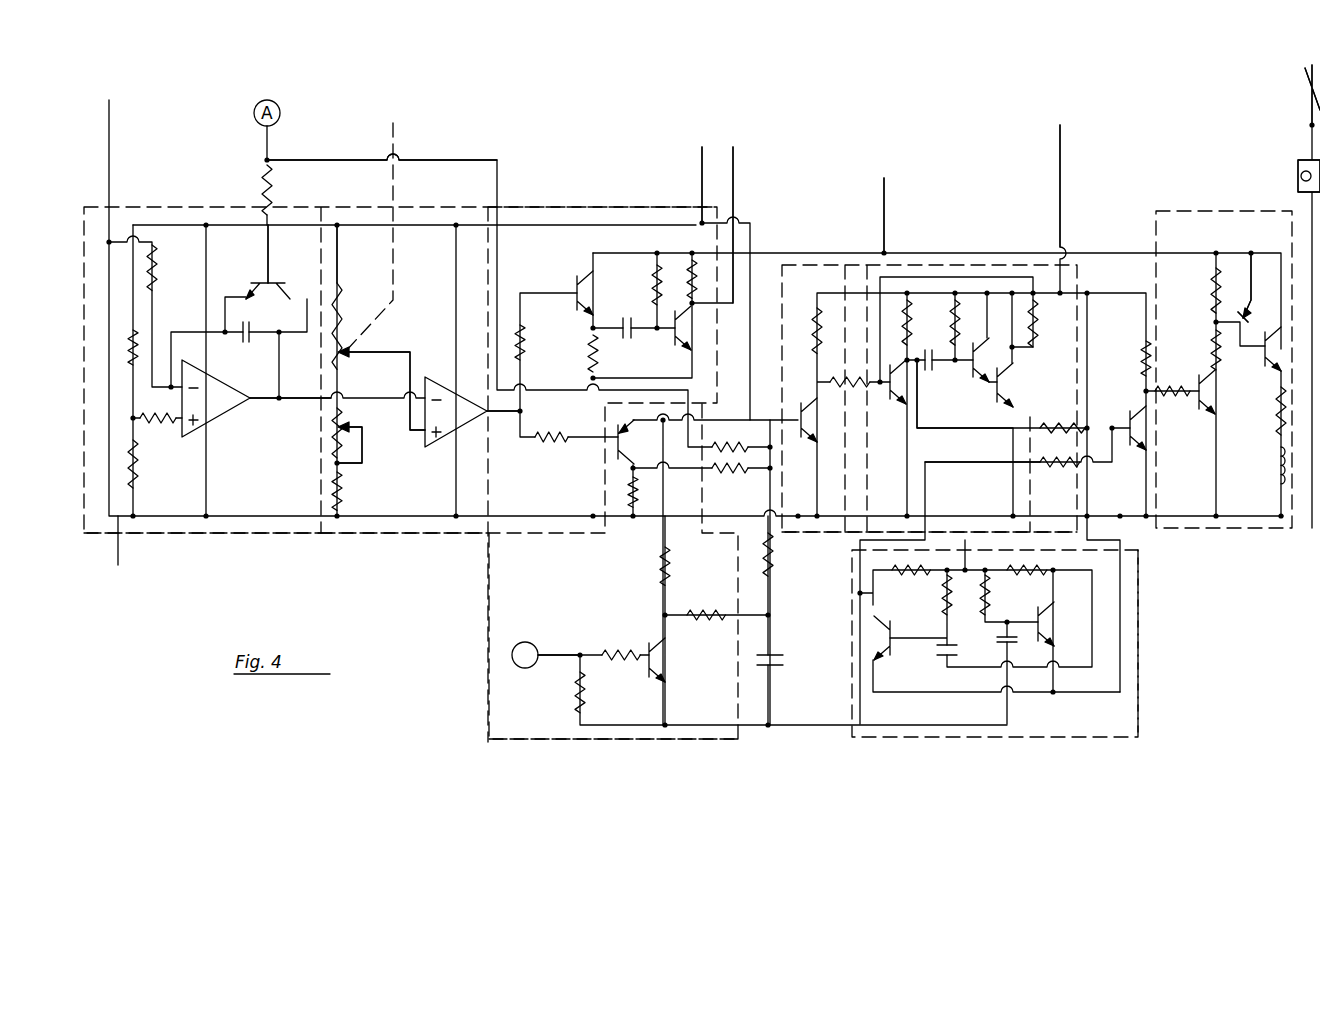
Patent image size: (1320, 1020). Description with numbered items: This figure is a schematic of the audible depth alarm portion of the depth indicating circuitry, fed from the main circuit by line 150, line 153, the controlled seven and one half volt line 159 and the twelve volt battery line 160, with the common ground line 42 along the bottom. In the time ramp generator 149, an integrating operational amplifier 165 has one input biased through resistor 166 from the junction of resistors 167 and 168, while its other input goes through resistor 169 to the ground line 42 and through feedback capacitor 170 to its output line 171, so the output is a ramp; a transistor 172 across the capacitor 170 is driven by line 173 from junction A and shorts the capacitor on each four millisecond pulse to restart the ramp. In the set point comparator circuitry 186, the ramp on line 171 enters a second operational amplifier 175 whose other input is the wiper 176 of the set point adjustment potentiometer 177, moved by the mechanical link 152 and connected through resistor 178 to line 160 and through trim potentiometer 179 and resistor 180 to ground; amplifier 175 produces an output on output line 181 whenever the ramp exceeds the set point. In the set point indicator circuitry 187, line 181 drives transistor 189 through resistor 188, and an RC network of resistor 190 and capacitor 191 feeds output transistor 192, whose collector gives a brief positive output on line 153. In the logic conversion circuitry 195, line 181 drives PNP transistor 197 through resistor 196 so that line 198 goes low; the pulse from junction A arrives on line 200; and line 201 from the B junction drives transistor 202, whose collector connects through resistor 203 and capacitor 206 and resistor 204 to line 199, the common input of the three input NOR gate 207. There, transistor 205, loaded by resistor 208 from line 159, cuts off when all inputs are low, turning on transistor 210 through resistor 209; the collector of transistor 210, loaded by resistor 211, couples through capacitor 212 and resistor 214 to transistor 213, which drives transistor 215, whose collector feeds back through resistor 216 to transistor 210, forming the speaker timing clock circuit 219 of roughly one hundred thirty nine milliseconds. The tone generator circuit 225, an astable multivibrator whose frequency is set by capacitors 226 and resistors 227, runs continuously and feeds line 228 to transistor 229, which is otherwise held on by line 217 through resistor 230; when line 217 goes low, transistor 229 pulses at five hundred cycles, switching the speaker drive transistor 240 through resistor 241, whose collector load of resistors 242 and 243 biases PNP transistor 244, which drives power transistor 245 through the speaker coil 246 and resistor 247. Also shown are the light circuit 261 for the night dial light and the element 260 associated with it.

The ground line 42 is at (130, 550).
The time ramp generator 149 is at (198, 538).
The line 150 is at (884, 198).
The link 152 is at (393, 138).
The line 153 is at (733, 175).
The controlled voltage line 159 is at (1060, 180).
The battery line 160 is at (702, 175).
The operational amplifier 165 is at (215, 400).
The resistor 166 is at (150, 422).
The resistor 167 is at (135, 340).
The resistor 168 is at (136, 465).
The resistor 169 is at (155, 270).
The feedback capacitor 170 is at (245, 316).
The output line 171 is at (297, 402).
The transistor 172 is at (285, 278).
The line 173 is at (266, 258).
The operational amplifier 175 is at (448, 435).
The wiper 176 is at (380, 352).
The set point adjustment potentiometer 177 is at (345, 335).
The resistor 178 is at (340, 285).
The trim potentiometer 179 is at (345, 420).
The resistor 180 is at (340, 488).
The output line 181 is at (512, 418).
The set point comparator circuitry 186 is at (383, 538).
The set point indicator circuitry 187 is at (550, 538).
The resistor 188 is at (524, 342).
The transistor 189 is at (585, 300).
The resistor 190 is at (655, 278).
The capacitor 191 is at (652, 312).
The output transistor 192 is at (685, 338).
The logic conversion circuitry 195 is at (628, 742).
The resistor 196 is at (570, 418).
The transistor 197 is at (640, 430).
The line 198 is at (688, 470).
The line 199 is at (765, 480).
The line 200 is at (762, 432).
The line 201 is at (548, 655).
The transistor 202 is at (655, 668).
The resistor 203 is at (718, 592).
The resistor 204 is at (765, 553).
The transistor 205 is at (826, 438).
The capacitor 206 is at (783, 665).
The three input NOR gate 207 is at (810, 532).
The resistor 208 is at (812, 330).
The resistor 209 is at (838, 388).
The transistor 210 is at (905, 390).
The resistor 211 is at (910, 320).
The capacitor 212 is at (935, 365).
The transistor 213 is at (970, 382).
The resistor 214 is at (952, 340).
The transistor 215 is at (1005, 395).
The resistor 216 is at (1050, 310).
The line 217 is at (940, 430).
The speaker timing clock circuit 219 is at (1035, 475).
The tone generator circuit 225 is at (1138, 660).
The capacitors 226 is at (978, 634).
The resistors 227 is at (976, 600).
The line 228 is at (940, 465).
The transistor 229 is at (1135, 445).
The resistor 230 is at (1040, 420).
The speaker drive transistor 240 is at (1200, 400).
The resistor 241 is at (1185, 365).
The resistor 242 is at (1220, 350).
The resistor 243 is at (1214, 295).
The PNP transistor 244 is at (1262, 312).
The power transistor 245 is at (1275, 365).
The speaker coil 246 is at (1280, 470).
The resistor 247 is at (1279, 412).
The lead 260 is at (1305, 110).
The light circuit 261 is at (1298, 160).